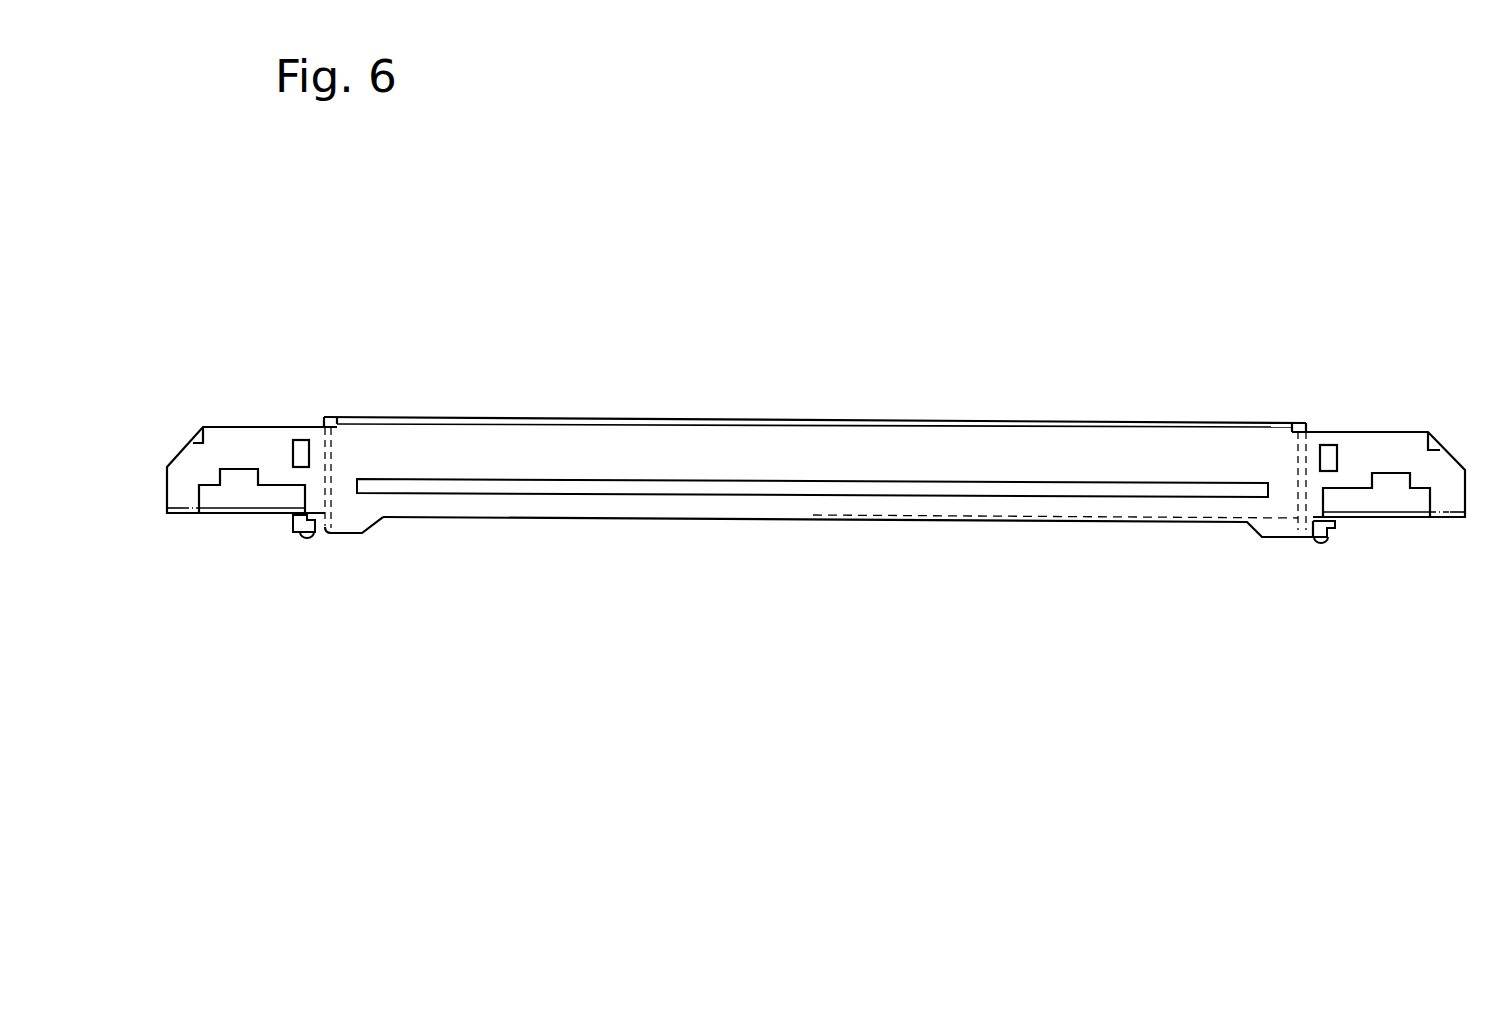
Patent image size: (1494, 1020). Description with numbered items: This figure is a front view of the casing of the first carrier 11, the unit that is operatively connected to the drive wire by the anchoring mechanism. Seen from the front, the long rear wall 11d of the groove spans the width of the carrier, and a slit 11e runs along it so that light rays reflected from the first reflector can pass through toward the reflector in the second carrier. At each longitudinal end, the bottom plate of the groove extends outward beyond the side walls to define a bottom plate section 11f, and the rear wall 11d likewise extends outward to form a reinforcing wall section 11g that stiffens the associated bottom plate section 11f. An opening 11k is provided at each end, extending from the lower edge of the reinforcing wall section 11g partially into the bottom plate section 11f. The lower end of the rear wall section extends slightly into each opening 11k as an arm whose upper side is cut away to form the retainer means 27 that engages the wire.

The first carrier 11 is at (600, 412).
The rear wall 11d is at (835, 438).
The slit 11e is at (663, 490).
The bottom plate section 11f is at (213, 515).
The reinforcing wall section 11g is at (238, 442).
The opening 11k is at (243, 493).
The retainer means 27 is at (290, 516).